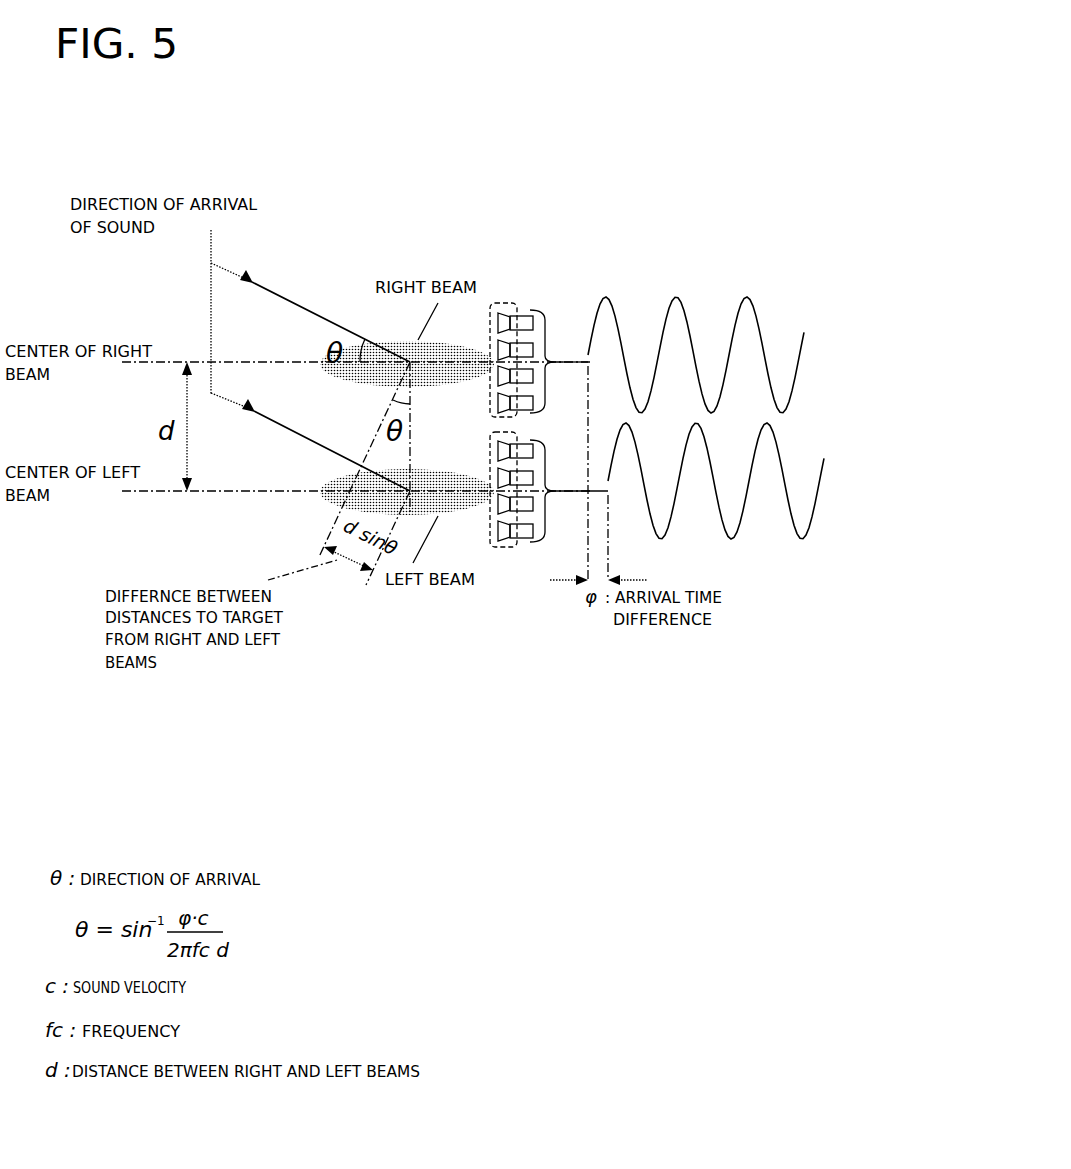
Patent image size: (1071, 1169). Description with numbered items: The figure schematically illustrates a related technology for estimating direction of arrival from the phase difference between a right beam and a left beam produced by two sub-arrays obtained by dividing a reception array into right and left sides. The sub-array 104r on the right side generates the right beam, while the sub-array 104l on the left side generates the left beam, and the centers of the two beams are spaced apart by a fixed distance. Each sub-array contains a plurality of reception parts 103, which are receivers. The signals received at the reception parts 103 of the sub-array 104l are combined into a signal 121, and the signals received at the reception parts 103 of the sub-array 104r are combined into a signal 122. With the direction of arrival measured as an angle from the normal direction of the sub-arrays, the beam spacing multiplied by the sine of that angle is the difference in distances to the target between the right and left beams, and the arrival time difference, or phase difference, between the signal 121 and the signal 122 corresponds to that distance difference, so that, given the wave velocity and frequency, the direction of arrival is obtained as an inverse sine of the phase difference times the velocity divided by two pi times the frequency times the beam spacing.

The reception part 103 is at (559, 442).
The sub-array 104r is at (498, 298).
The sub-array 104l is at (503, 545).
The signal 121 is at (677, 530).
The signal 122 is at (693, 322).